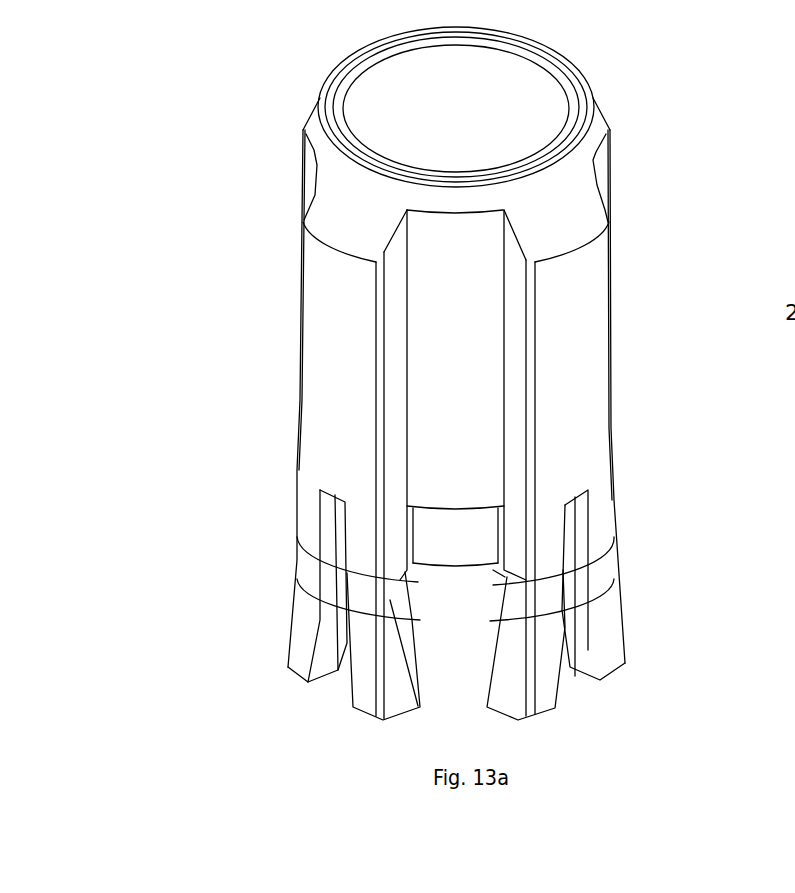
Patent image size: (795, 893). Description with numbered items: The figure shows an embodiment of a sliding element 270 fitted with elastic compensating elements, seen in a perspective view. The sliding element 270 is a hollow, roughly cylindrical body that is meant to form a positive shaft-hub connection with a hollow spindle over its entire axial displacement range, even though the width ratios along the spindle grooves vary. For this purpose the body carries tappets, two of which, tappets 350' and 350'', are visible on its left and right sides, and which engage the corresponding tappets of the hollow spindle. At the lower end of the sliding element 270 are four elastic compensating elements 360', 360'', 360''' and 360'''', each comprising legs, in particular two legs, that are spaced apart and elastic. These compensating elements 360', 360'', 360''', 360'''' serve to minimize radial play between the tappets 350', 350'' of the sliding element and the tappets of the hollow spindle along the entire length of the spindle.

The sliding element 270 is at (247, 349).
The tappet 350' is at (262, 275).
The tappet 350'' is at (657, 288).
The elastic compensating element 360' is at (248, 586).
The elastic compensating element 360'' is at (314, 487).
The elastic compensating element 360''' is at (596, 490).
The elastic compensating element 360'''' is at (667, 585).